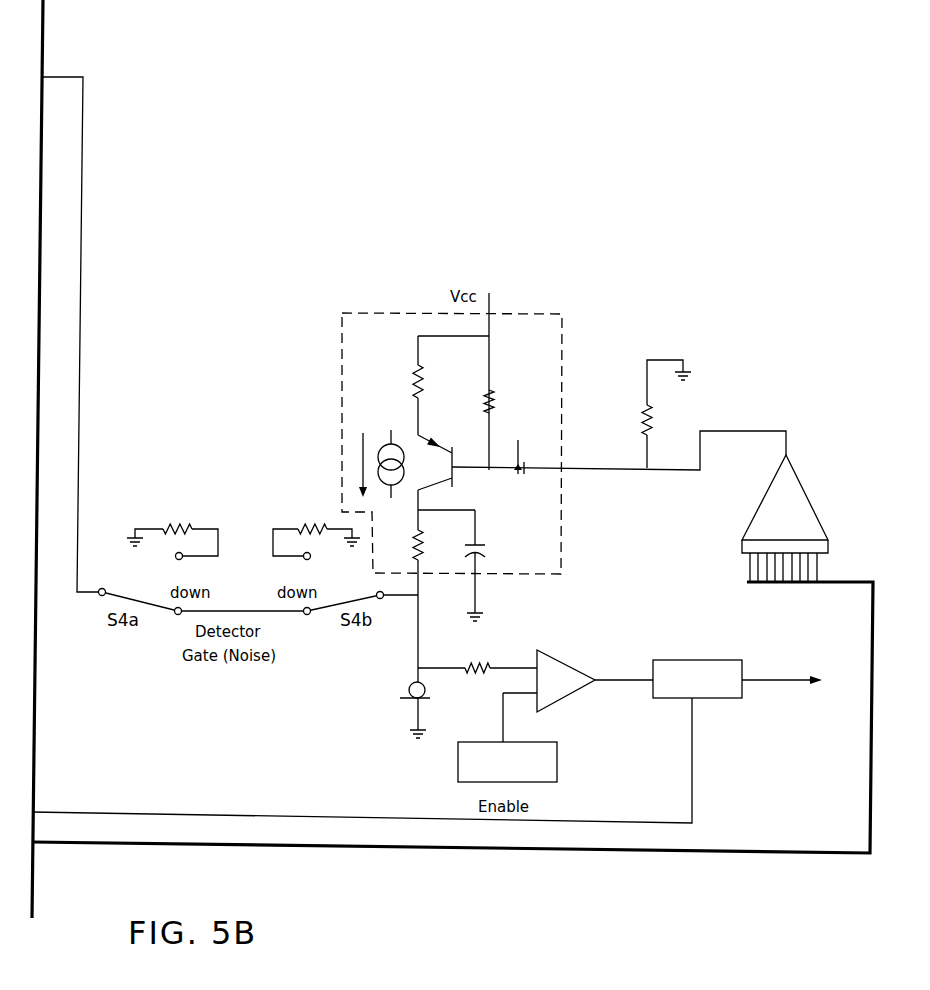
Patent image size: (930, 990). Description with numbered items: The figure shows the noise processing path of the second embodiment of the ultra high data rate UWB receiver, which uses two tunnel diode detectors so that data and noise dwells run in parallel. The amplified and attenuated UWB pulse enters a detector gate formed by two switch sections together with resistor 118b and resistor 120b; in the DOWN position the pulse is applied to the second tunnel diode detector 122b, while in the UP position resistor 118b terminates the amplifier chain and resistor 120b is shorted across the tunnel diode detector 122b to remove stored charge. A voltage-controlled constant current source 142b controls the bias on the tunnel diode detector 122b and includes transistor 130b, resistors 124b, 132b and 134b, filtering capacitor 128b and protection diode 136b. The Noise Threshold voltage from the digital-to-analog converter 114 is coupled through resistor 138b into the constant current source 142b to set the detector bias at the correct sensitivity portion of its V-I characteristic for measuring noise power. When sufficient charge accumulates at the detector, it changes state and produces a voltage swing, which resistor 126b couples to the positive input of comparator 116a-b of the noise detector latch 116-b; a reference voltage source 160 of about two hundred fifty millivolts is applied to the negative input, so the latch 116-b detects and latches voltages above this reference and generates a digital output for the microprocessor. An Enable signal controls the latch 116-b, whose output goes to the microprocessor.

The constant current source 142b is at (340, 371).
The resistor 132b is at (412, 383).
The resistor 134b is at (483, 404).
The transistor 130b is at (455, 480).
The protection diode 136b is at (518, 440).
The resistor 124b is at (445, 537).
The filtering capacitor 128b is at (478, 541).
The resistor 138b is at (645, 418).
The digital-to-analog converter 114 is at (799, 481).
The resistor 118b is at (165, 522).
The resistor 120b is at (310, 522).
The second tunnel diode detector 122b is at (411, 685).
The resistor 126b is at (477, 652).
The comparator 116a-b is at (576, 640).
The noise detector latch 116-b is at (716, 658).
The reference voltage source 160 is at (548, 741).